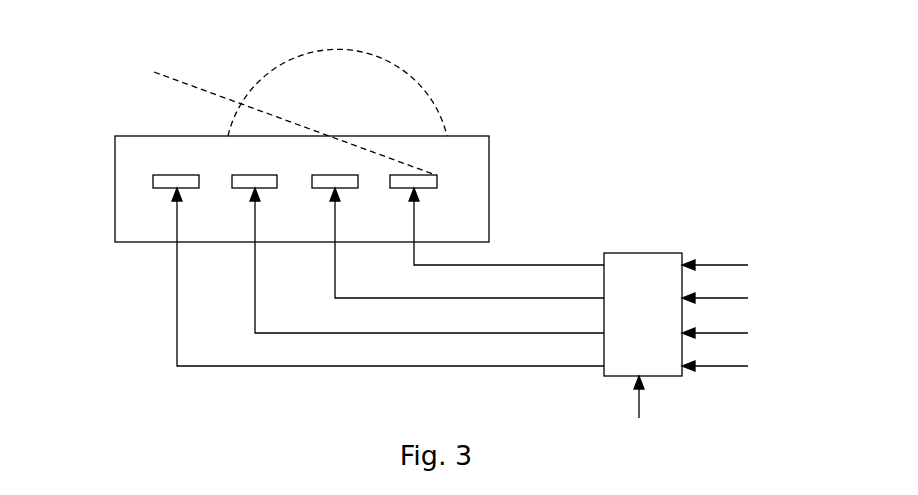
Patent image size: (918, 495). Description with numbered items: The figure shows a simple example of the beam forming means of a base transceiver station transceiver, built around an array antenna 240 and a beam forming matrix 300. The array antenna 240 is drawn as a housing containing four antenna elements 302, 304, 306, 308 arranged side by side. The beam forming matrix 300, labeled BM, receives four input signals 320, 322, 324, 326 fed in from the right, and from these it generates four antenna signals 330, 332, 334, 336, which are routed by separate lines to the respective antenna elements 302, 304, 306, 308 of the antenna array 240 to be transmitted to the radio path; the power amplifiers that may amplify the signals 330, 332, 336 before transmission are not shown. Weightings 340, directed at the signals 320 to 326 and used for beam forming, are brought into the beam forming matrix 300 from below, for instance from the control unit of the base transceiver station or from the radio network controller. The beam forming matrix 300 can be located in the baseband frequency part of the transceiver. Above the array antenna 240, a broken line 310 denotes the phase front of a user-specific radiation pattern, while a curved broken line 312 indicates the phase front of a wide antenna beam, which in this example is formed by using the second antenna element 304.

The array antenna 240 is at (115, 207).
The beam forming matrix 300 is at (622, 252).
The antenna element 302 is at (426, 188).
The second antenna element 304 is at (347, 188).
The antenna element 306 is at (265, 188).
The antenna element 308 is at (187, 188).
The broken line 310 is at (154, 72).
The broken line 312 is at (383, 60).
The signal 320 is at (718, 263).
The signal 322 is at (733, 298).
The signal 324 is at (733, 333).
The signal 326 is at (727, 367).
The antenna signal 330 is at (490, 263).
The antenna signal 332 is at (335, 262).
The antenna signal 334 is at (255, 285).
The antenna signal 336 is at (177, 325).
The weightings 340 is at (635, 397).